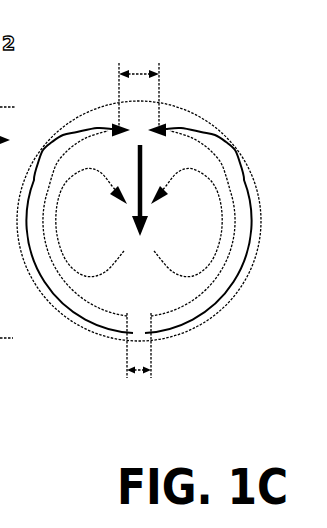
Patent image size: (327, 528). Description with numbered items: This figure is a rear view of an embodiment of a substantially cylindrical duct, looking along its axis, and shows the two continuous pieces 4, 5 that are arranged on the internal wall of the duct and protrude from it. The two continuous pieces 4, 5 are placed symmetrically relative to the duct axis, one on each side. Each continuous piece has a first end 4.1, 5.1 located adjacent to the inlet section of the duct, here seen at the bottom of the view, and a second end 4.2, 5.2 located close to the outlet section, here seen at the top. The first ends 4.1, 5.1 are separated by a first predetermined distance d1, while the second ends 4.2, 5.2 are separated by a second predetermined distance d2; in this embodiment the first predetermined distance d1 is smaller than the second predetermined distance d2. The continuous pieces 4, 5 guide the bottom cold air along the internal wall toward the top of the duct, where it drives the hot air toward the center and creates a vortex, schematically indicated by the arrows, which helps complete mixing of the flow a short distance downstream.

The continuous piece 4 is at (68, 298).
The first end of continuous piece 4.1 is at (129, 325).
The second end of continuous piece 4.2 is at (121, 121).
The continuous piece 5 is at (218, 152).
The first end of continuous piece 5.1 is at (152, 322).
The second end of continuous piece 5.2 is at (156, 122).
The first predetermined distance d1 is at (140, 374).
The second predetermined distance d2 is at (139, 72).